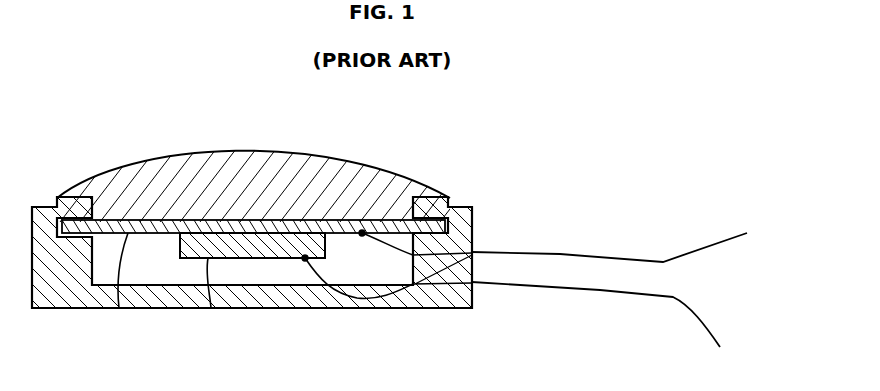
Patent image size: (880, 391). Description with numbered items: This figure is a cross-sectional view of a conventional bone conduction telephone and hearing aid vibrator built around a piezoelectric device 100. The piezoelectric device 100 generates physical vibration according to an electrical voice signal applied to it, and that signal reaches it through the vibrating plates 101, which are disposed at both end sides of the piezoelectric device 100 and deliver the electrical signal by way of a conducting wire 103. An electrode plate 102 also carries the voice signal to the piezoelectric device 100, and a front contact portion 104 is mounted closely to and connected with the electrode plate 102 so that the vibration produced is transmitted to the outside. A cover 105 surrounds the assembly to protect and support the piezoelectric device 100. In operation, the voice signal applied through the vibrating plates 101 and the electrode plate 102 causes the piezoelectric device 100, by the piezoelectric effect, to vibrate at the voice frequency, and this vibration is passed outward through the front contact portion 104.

The piezoelectric device 100 is at (211, 308).
The vibrating plate 101 is at (257, 258).
The electrode plate 102 is at (119, 308).
The conducting wire 103 is at (552, 252).
The front contact portion 104 is at (383, 169).
The cover 105 is at (55, 307).